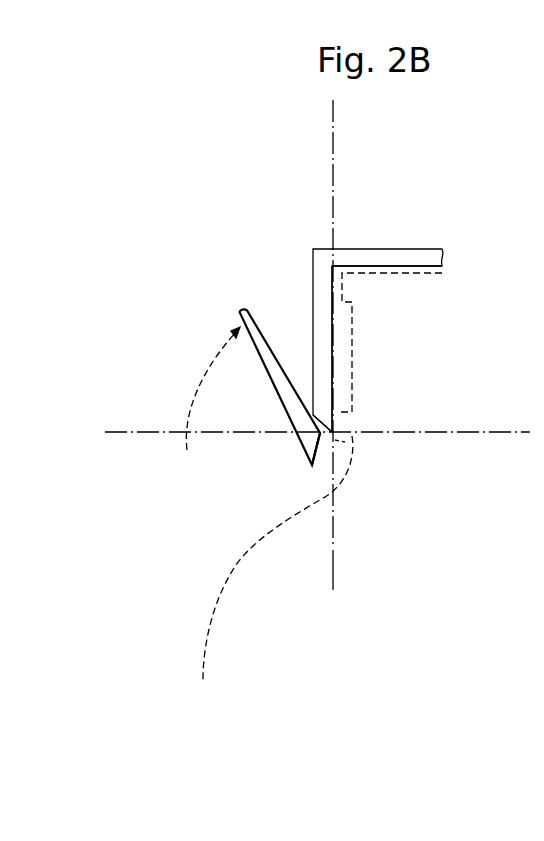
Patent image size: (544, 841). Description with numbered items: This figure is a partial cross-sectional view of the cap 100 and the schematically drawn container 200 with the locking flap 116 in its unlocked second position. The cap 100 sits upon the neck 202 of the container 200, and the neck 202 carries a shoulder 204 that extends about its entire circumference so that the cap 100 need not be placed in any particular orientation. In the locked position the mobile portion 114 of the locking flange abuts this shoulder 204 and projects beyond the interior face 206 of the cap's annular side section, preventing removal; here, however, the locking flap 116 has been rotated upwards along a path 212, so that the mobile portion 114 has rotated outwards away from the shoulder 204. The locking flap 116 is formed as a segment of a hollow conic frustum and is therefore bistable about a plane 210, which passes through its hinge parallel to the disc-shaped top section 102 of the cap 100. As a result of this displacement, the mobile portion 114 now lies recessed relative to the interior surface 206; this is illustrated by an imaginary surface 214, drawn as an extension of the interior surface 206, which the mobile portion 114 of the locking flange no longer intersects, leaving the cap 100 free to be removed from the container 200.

The cap 100 is at (405, 248).
The disc-shaped top section 102 is at (367, 255).
The mobile portion of the locking flange 114 is at (310, 460).
The locking flap 116 is at (257, 360).
The container 200 is at (208, 615).
The neck 202 is at (352, 377).
The shoulder 204 is at (343, 438).
The interior face of the annular side section 206 is at (333, 344).
The plane 210 is at (490, 433).
The path 212 is at (197, 388).
The imaginary surface 214 is at (333, 575).